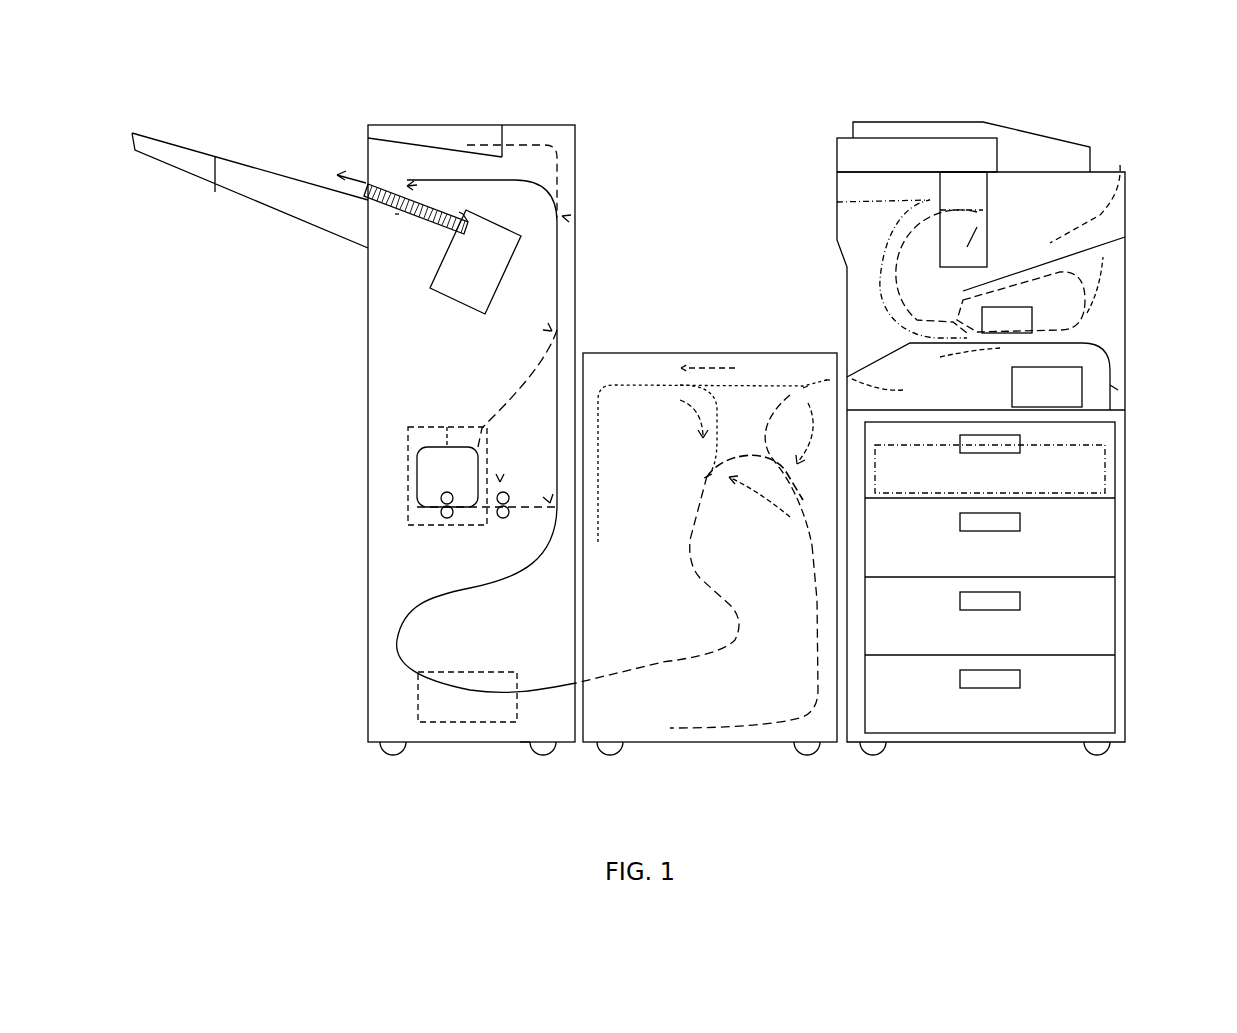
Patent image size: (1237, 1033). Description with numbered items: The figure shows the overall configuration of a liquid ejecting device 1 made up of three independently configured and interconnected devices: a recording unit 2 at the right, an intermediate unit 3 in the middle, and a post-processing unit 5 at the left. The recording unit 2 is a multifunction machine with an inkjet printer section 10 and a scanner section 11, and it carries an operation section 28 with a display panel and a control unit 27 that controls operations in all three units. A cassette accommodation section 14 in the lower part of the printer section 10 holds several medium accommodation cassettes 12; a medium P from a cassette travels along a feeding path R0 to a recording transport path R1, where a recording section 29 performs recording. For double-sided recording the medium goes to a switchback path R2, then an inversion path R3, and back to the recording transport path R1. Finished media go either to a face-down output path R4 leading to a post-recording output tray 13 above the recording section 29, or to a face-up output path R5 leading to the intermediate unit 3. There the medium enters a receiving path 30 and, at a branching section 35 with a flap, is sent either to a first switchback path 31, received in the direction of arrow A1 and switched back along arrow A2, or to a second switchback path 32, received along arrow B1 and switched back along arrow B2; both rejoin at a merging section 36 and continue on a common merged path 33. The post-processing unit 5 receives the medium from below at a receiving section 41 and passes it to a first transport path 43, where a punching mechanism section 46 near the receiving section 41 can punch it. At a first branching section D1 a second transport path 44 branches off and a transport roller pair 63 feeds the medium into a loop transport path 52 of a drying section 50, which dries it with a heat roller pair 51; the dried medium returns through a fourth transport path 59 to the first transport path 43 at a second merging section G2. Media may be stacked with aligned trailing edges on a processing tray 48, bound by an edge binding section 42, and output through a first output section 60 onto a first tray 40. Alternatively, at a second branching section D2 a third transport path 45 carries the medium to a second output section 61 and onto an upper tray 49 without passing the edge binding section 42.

The liquid ejecting device 1 is at (742, 108).
The recording unit 2 is at (816, 231).
The intermediate unit 3 is at (691, 306).
The post-processing unit 5 is at (500, 72).
The printer section 10 is at (1136, 172).
The scanner section 11 is at (990, 113).
The medium accommodation cassette 12 is at (1050, 700).
The post-recording output tray 13 is at (1093, 191).
The cassette accommodation section 14 is at (1136, 410).
The control unit 27 is at (1010, 393).
The operation section 28 is at (903, 122).
The recording section 29 is at (1010, 301).
The receiving path 30 is at (827, 380).
The first switchback path 31 is at (628, 373).
The second switchback path 32 is at (812, 565).
The merged path 33 is at (660, 655).
The branching section 35 is at (803, 388).
The merging section 36 is at (710, 476).
The first tray 40 is at (235, 129).
The receiving section 41 is at (561, 668).
The edge binding section 42 is at (436, 290).
The first transport path 43 is at (535, 688).
The second transport path 44 is at (508, 466).
The third transport path 45 is at (536, 140).
The punching mechanism section 46 is at (445, 735).
The processing tray 48 is at (397, 214).
The upper tray 49 is at (440, 147).
The drying section 50 is at (408, 492).
The heat roller pair 51 is at (458, 513).
The loop transport path 52 is at (440, 427).
The fourth transport path 59 is at (482, 425).
The first output section 60 is at (357, 160).
The second output section 61 is at (488, 129).
The transport roller pair 63 is at (500, 480).
The arrow A1 is at (720, 370).
The arrow A2 is at (689, 430).
The arrow B1 is at (800, 470).
The arrow B2 is at (755, 489).
The first branching section D1 is at (549, 500).
The second branching section D2 is at (562, 216).
The second merging section G2 is at (550, 330).
The medium P is at (399, 183).
The feeding path R0 is at (1115, 388).
The recording transport path R1 is at (953, 362).
The switchback path R2 is at (916, 305).
The inversion path R3 is at (1105, 278).
The face-down output path R4 is at (837, 203).
The face-up output path R5 is at (894, 392).